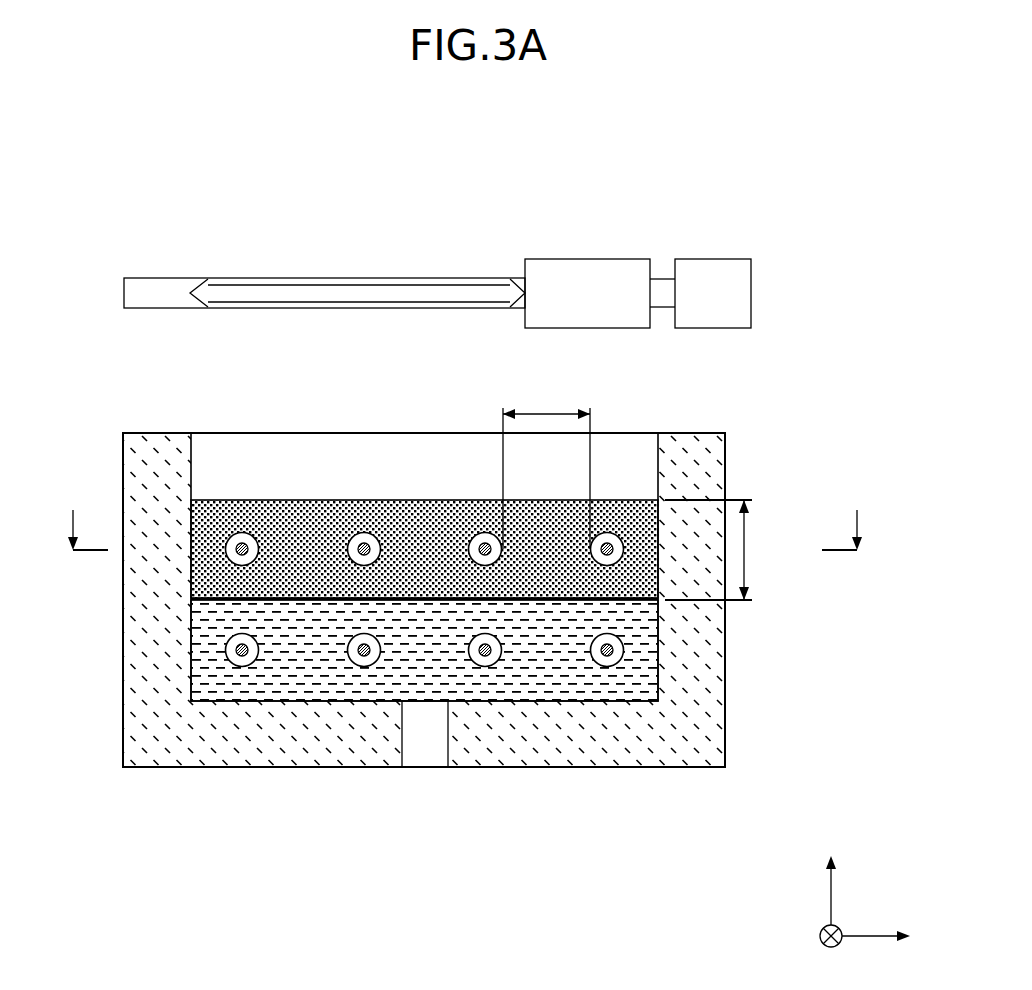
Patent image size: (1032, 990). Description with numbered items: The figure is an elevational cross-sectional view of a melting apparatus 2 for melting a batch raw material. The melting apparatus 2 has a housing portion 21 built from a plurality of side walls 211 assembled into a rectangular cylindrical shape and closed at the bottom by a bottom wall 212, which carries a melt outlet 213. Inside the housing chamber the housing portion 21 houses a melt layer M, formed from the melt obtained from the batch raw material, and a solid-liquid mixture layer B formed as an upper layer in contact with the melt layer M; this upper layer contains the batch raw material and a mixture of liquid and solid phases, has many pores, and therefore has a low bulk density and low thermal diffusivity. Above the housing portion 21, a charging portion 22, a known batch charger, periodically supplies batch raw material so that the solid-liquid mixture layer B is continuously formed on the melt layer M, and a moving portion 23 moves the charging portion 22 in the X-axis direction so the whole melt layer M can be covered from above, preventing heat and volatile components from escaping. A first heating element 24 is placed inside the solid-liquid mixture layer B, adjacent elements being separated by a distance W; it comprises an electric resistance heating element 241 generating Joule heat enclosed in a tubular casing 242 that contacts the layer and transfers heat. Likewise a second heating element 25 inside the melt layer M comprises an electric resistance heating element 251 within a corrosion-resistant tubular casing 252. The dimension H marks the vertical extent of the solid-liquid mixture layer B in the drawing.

The melting apparatus 2 is at (67, 207).
The housing portion 21 is at (411, 631).
The side walls 211 is at (133, 645).
The bottom wall 212 is at (531, 768).
The melt outlet 213 is at (427, 767).
The charging portion 22 is at (583, 266).
The moving portion 23 is at (710, 268).
The first heating element 24 is at (418, 447).
The electric resistance heating element 241 is at (242, 549).
The casing 242 is at (258, 551).
The second heating element 25 is at (418, 755).
The electric resistance heating element 251 is at (242, 650).
The casing 252 is at (258, 648).
The solid-liquid mixture layer B is at (422, 520).
The melt layer M is at (607, 685).
The distance W is at (546, 467).
The height dimension H is at (718, 550).